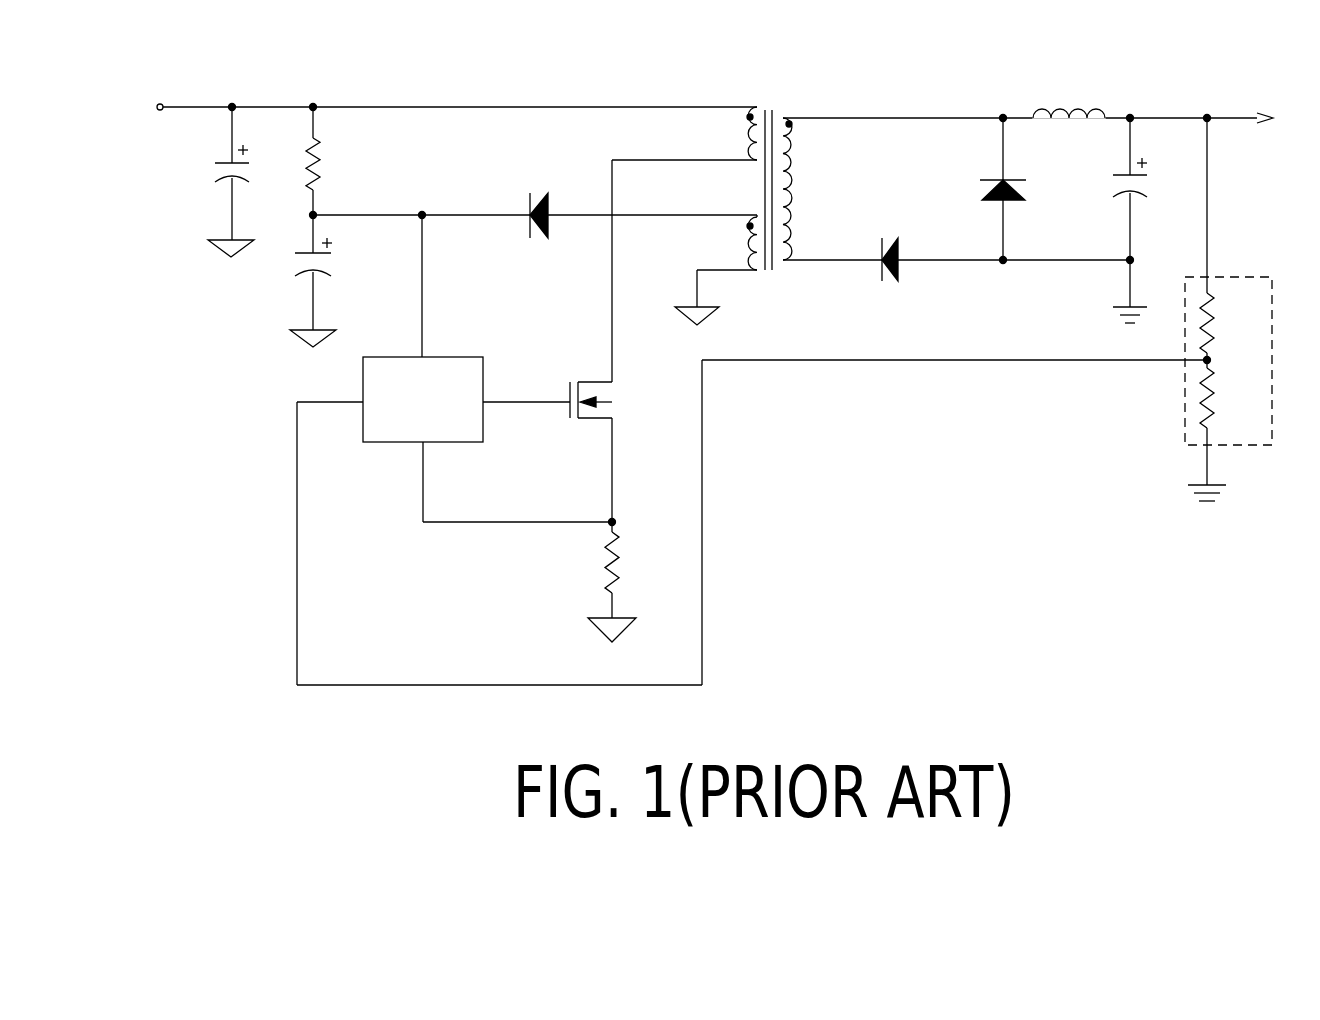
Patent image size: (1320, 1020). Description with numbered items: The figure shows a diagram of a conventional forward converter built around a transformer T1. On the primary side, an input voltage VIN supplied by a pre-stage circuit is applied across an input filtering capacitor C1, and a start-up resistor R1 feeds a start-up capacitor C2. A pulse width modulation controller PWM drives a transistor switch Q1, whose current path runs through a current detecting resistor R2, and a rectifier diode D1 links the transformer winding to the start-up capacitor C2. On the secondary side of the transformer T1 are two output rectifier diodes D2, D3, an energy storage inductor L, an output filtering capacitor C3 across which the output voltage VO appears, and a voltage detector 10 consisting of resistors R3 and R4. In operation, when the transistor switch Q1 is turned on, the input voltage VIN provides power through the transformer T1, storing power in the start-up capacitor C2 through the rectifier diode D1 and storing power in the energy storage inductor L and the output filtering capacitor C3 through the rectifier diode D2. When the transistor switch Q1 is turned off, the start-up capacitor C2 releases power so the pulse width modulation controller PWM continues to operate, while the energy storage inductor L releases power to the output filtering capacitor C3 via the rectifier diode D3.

The input voltage VIN is at (430, 106).
The input filtering capacitor C1 is at (214, 182).
The start-up resistor R1 is at (297, 161).
The start-up capacitor C2 is at (304, 281).
The rectifier diode D1 is at (541, 196).
The transformer T1 is at (733, 194).
The energy storage inductor L is at (1069, 93).
The output voltage VO is at (1287, 117).
The output rectifier diode D3 is at (989, 189).
The output rectifier diode D2 is at (881, 239).
The output filtering capacitor C3 is at (1141, 220).
The voltage detector 10 is at (1272, 361).
The resistor R3 is at (1227, 243).
The resistor R4 is at (1221, 434).
The pulse width modulation controller PWM is at (423, 399).
The transistor switch Q1 is at (612, 401).
The current detecting resistor R2 is at (604, 587).